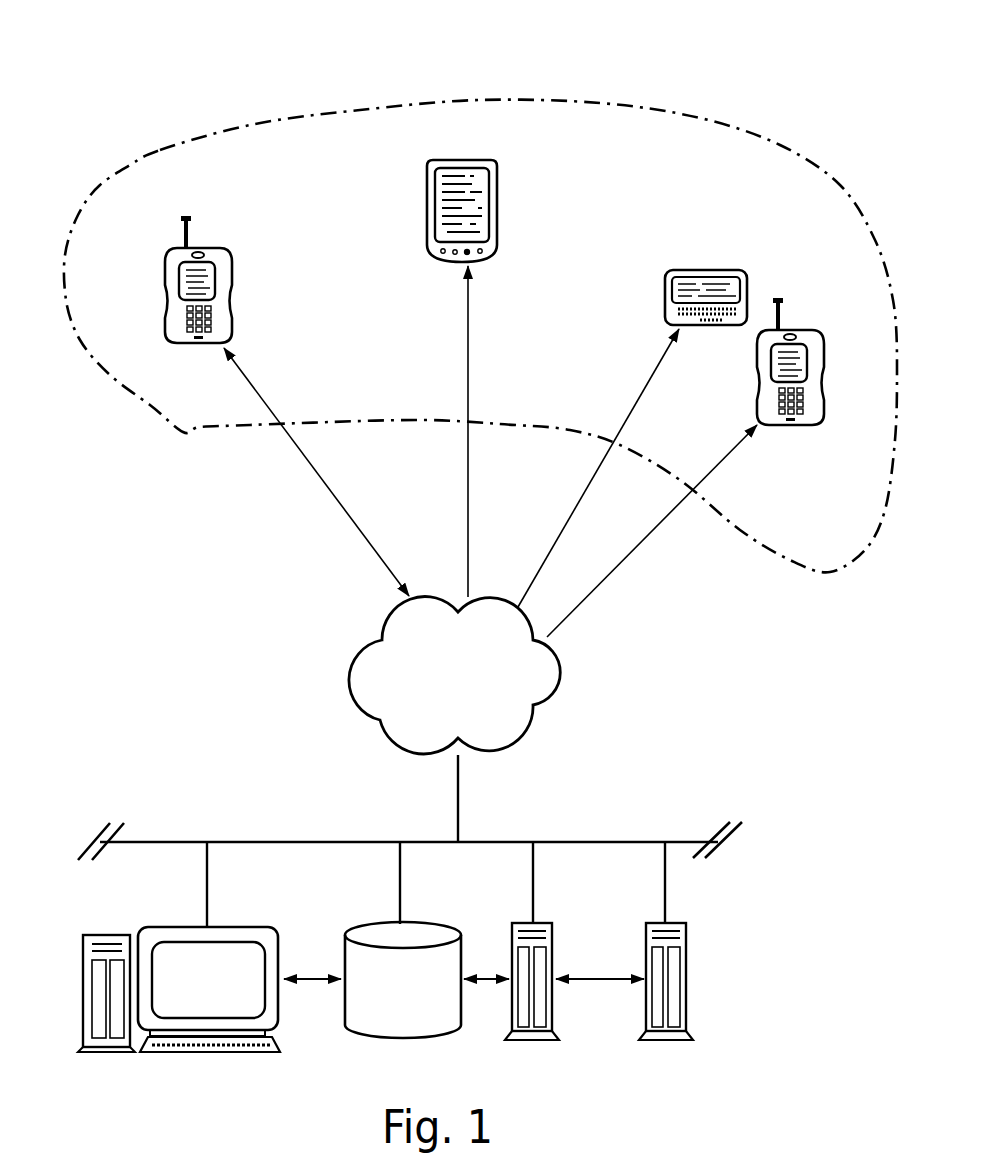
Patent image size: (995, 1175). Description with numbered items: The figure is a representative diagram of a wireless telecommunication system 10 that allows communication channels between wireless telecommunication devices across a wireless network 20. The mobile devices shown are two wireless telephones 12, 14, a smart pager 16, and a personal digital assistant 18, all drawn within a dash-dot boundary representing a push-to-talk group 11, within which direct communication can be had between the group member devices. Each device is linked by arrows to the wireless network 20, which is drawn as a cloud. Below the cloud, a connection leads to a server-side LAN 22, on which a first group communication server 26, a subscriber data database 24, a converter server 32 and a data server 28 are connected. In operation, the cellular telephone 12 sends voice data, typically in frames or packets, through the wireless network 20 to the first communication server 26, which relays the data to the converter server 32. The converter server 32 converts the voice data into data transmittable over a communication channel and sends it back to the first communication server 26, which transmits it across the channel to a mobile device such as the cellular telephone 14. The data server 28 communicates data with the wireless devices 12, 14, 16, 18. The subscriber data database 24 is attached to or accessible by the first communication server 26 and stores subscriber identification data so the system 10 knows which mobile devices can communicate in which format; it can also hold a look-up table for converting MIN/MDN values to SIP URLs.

The wireless telecommunication system 10 is at (448, 76).
The push-to-talk group 11 is at (163, 152).
The wireless telephone 12 is at (213, 248).
The wireless telephone 14 is at (792, 428).
The smart pager 16 is at (728, 327).
The personal digital assistant 18 is at (427, 228).
The wireless network 20 is at (567, 673).
The server-side LAN 22 is at (240, 842).
The subscriber data database 24 is at (345, 1008).
The first group communication server 26 is at (182, 925).
The data server 28 is at (687, 978).
The converter server 32 is at (553, 1017).